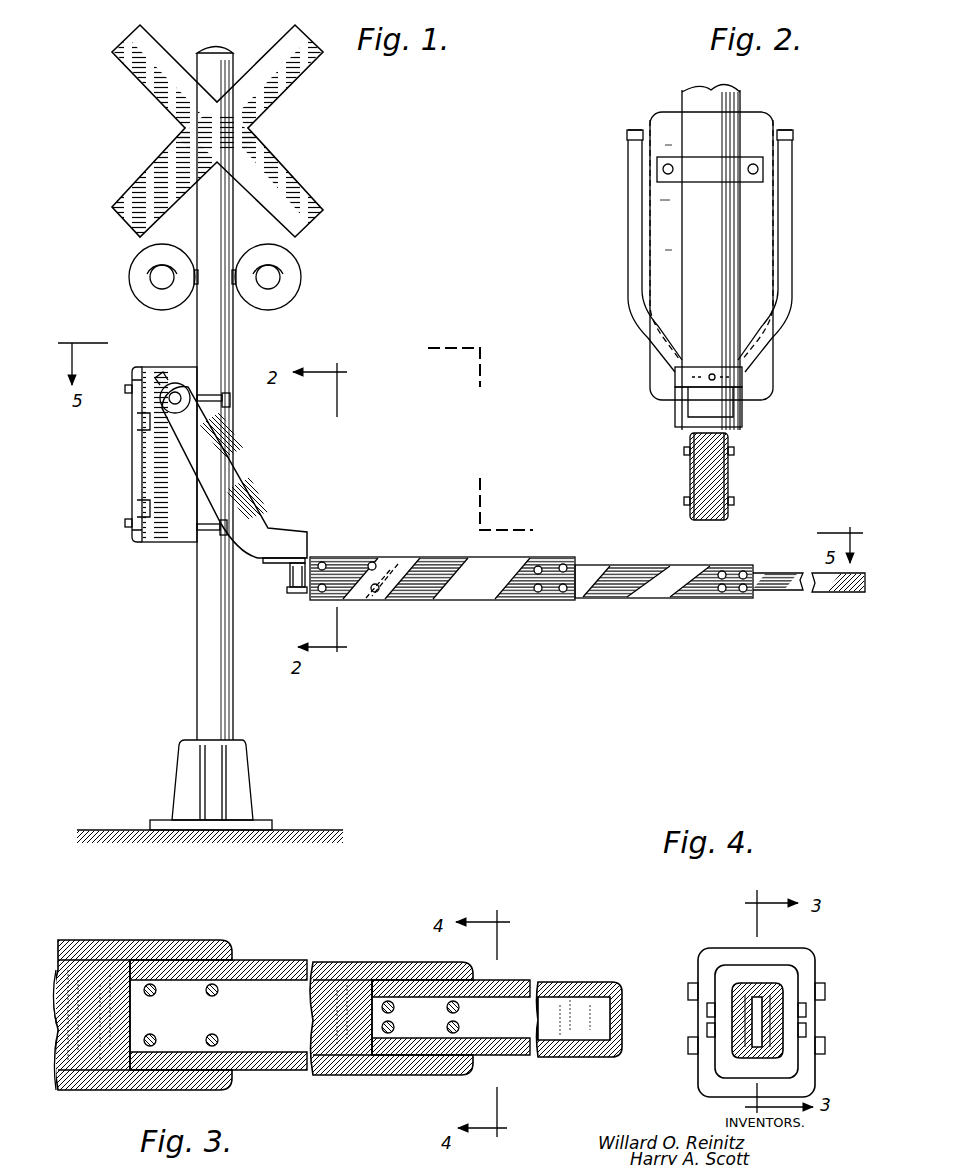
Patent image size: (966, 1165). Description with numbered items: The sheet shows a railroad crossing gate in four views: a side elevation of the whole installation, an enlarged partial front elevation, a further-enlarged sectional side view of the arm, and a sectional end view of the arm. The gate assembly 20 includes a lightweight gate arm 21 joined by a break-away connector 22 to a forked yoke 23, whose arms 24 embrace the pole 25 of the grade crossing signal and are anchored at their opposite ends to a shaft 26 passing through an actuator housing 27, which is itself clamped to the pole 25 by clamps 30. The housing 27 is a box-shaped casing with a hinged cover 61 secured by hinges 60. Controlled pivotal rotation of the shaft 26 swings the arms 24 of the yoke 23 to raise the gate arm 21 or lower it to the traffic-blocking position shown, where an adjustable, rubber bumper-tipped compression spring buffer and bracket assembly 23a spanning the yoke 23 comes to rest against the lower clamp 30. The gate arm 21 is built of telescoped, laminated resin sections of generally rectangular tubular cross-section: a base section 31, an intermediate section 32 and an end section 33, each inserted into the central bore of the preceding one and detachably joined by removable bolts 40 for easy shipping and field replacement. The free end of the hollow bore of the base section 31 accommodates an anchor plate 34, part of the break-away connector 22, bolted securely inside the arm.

In FIG. 1, the gate assembly 20 is at (327, 522).
In FIG. 1, the lightweight gate arm 21 is at (586, 614).
In FIG. 1, the break-away connector 22 is at (284, 598).
In FIG. 1, the forked yoke 23 is at (200, 467).
In FIG. 2, the forked yoke 23 is at (711, 252).
In FIG. 2, the compression spring buffer and bracket assembly 23a is at (688, 378).
In FIG. 1, the arms 24 is at (222, 460).
In FIG. 2, the arms 24 is at (635, 244).
In FIG. 1, the pole 25 is at (203, 643).
In FIG. 2, the pole 25 is at (741, 100).
In FIG. 1, the shaft 26 is at (180, 386).
In FIG. 2, the shaft 26 is at (627, 166).
In FIG. 1, the actuator housing 27 is at (167, 547).
In FIG. 2, the actuator housing 27 is at (788, 124).
In FIG. 1, the clamps 30 is at (231, 400).
In FIG. 2, the clamps 30 is at (712, 182).
In FIG. 1, the base section 31 is at (503, 594).
In FIG. 2, the base section 31 is at (733, 481).
In FIG. 3, the base section 31 is at (165, 941).
In FIG. 4, the base section 31 is at (804, 963).
In FIG. 1, the intermediate section 32 is at (667, 599).
In FIG. 3, the intermediate section 32 is at (354, 962).
In FIG. 4, the intermediate section 32 is at (727, 980).
In FIG. 1, the end section 33 is at (833, 593).
In FIG. 3, the end section 33 is at (570, 1058).
In FIG. 4, the end section 33 is at (800, 1003).
In FIG. 1, the anchor plate 34 is at (361, 604).
In FIG. 2, the anchor plate 34 is at (693, 475).
In FIG. 1, the removable bolts 40 is at (540, 568).
In FIG. 3, the removable bolts 40 is at (216, 995).
In FIG. 4, the removable bolts 40 is at (690, 995).
In FIG. 1, the hinges 60 is at (140, 433).
In FIG. 1, the hinged cover 61 is at (133, 467).